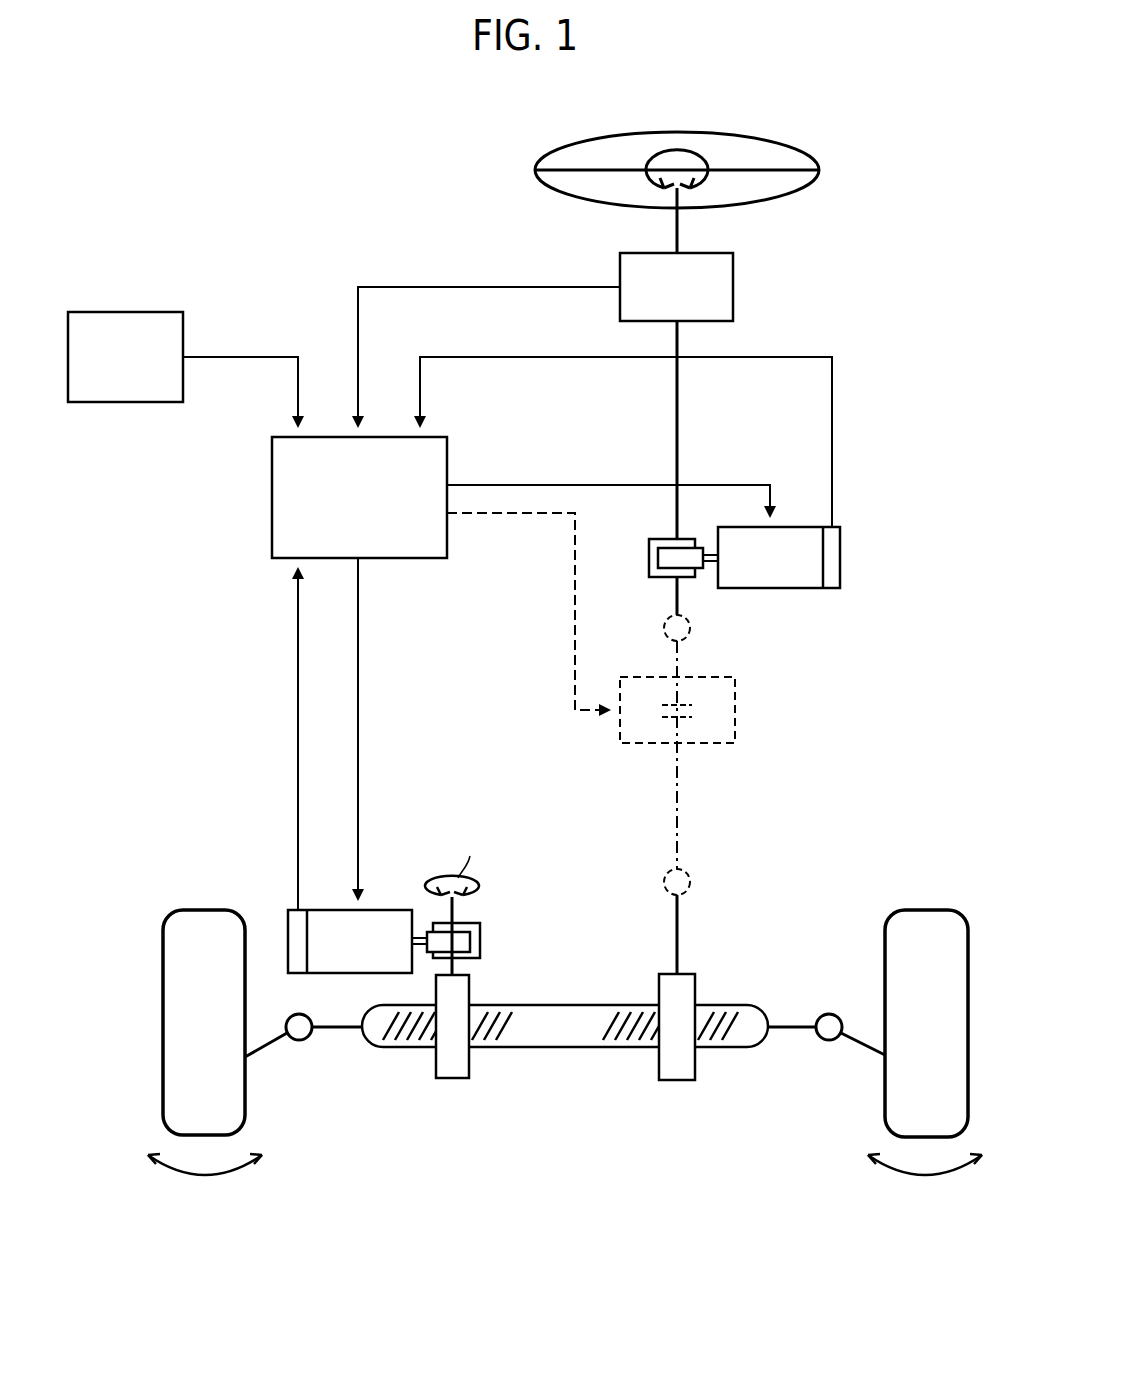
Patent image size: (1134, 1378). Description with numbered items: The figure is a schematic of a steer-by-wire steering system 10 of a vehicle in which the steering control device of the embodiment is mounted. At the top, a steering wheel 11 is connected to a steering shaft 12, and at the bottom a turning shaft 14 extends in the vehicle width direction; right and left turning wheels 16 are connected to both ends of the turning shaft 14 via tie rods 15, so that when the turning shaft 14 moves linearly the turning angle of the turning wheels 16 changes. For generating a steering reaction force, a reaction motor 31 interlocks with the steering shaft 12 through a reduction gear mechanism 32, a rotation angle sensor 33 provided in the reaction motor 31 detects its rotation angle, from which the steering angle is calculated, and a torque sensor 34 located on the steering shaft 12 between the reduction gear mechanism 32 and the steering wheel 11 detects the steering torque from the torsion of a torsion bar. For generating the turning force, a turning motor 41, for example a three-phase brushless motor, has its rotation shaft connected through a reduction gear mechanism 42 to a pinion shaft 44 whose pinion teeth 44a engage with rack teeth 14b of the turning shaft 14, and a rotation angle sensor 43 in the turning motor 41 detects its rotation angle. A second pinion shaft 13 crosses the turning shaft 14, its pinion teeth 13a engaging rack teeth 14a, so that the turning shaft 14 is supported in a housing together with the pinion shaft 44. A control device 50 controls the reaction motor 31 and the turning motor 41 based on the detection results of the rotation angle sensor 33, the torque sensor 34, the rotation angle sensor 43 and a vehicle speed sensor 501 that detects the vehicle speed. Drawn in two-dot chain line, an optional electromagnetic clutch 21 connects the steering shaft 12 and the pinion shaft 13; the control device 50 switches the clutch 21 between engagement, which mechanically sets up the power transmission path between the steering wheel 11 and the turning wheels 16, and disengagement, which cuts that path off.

The steering system 10 is at (842, 131).
The steering wheel 11 is at (768, 140).
The steering shaft 12 is at (680, 229).
The pinion shaft 13 is at (675, 944).
The pinion teeth 13a is at (677, 1080).
The turning shaft 14 is at (562, 1048).
The rack teeth 14a is at (635, 1040).
The rack teeth 14b is at (503, 1040).
The tie rod 15 is at (333, 1030).
The turning wheel 16 is at (245, 1101).
The clutch 21 is at (735, 718).
The reaction motor 31 is at (801, 588).
The reduction gear mechanism 32 is at (645, 551).
The rotation angle sensor 33 is at (831, 588).
The torque sensor 34 is at (735, 287).
The turning motor 41 is at (392, 910).
The reduction gear mechanism 42 is at (486, 950).
The rotation angle sensor 43 is at (288, 955).
The pinion shaft 44 is at (458, 907).
The pinion teeth 44a is at (452, 1078).
The control device 50 is at (447, 558).
The vehicle speed sensor 501 is at (126, 312).